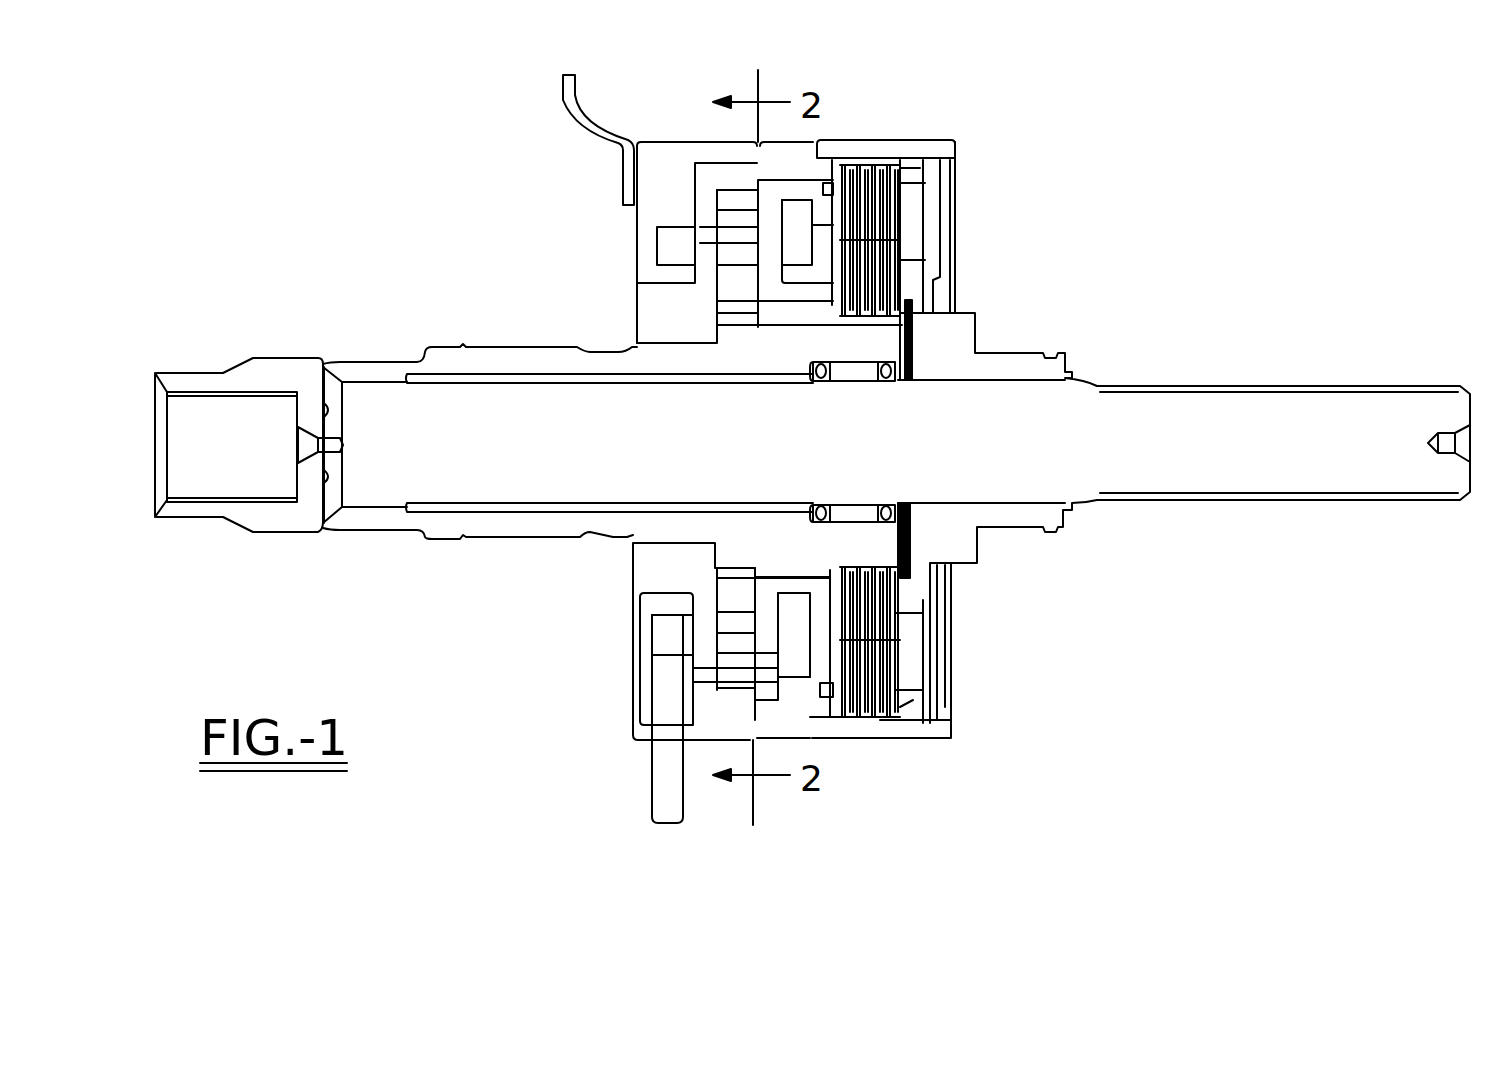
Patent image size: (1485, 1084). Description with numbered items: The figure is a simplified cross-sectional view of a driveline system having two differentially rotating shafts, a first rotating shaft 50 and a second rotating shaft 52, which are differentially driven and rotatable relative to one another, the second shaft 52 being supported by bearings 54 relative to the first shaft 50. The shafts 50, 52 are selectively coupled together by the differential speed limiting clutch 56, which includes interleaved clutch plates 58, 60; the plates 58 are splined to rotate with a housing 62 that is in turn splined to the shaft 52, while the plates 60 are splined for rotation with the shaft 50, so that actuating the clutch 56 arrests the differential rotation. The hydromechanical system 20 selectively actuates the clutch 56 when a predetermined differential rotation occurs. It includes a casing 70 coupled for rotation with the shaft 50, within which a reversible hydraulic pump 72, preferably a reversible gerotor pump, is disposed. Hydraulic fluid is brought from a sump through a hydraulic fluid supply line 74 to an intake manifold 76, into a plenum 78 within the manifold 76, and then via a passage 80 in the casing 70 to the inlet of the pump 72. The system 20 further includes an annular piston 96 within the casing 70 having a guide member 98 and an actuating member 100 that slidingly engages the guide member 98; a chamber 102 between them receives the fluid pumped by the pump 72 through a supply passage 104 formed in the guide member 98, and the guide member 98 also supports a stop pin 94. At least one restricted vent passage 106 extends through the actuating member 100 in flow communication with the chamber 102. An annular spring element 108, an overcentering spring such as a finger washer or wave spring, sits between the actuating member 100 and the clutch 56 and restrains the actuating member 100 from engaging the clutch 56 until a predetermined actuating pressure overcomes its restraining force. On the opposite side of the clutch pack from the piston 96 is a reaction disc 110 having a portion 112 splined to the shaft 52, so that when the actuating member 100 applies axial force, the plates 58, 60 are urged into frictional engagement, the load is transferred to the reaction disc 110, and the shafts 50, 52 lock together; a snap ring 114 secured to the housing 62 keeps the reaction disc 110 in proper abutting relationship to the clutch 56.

The hydromechanical system 20 is at (690, 132).
The first rotating shaft 50 is at (388, 365).
The second rotating shaft 52 is at (1313, 395).
The bearings 54 is at (840, 378).
The differential speed limiting clutch 56 is at (862, 150).
The clutch plates 58 is at (875, 167).
The clutch plates 60 is at (900, 315).
The housing 62 is at (956, 147).
The casing 70 is at (633, 314).
The reversible hydraulic pump 72 is at (728, 692).
The hydraulic fluid supply line 74 is at (655, 800).
The intake manifold 76 is at (636, 656).
The plenum 78 is at (660, 628).
The passage 80 is at (695, 238).
The stop pin 94 is at (700, 688).
The annular piston 96 is at (797, 193).
The guide member 98 is at (777, 298).
The actuating member 100 is at (812, 278).
The chamber 102 is at (800, 620).
The supply passage 104 is at (767, 620).
The restricted vent passage 106 is at (822, 210).
The annular spring element 108 is at (817, 697).
The reaction disc 110 is at (907, 707).
The portion 112 is at (1008, 524).
The snap ring 114 is at (928, 712).